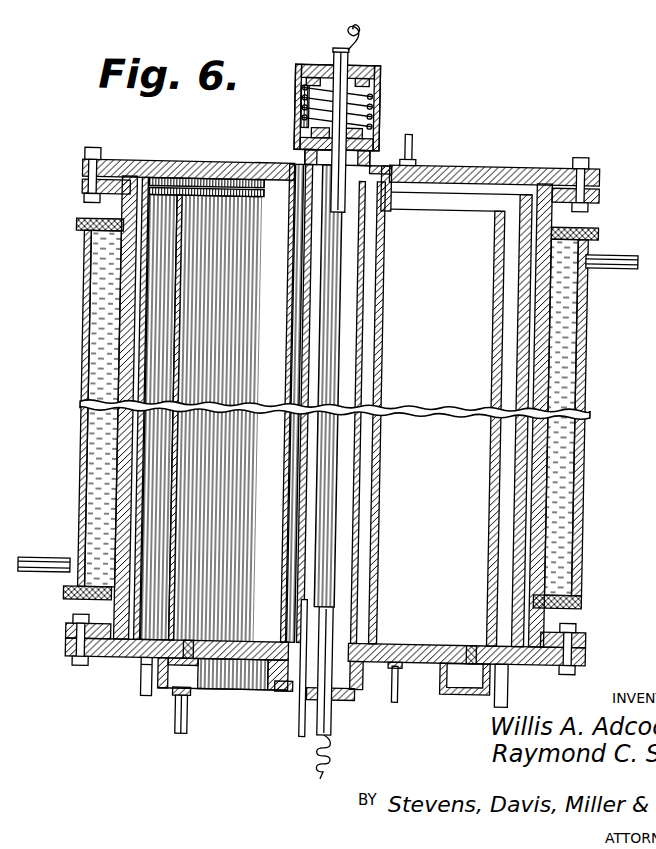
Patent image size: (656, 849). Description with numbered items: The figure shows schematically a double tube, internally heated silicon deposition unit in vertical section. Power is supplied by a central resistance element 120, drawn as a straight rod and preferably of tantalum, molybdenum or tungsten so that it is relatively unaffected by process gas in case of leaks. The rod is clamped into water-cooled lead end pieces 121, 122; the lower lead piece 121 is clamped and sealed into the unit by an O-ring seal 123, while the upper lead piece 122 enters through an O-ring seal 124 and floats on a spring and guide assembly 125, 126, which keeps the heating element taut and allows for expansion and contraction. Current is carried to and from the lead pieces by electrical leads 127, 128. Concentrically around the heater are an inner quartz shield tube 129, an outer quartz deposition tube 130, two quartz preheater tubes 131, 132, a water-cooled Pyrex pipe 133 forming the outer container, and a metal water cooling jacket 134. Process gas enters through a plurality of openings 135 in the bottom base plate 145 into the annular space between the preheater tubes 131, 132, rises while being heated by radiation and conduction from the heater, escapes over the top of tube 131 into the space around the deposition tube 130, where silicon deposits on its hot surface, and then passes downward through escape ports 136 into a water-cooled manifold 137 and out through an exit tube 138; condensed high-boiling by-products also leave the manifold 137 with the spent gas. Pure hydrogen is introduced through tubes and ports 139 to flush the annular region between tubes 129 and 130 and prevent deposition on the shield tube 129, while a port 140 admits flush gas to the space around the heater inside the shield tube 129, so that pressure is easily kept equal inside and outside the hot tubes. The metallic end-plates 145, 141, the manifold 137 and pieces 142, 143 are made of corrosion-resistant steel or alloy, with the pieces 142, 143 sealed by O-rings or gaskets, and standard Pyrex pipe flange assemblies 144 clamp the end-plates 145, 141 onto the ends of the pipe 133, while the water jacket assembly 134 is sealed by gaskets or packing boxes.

The resistance element 120 is at (330, 527).
The lower lead end piece 121 is at (339, 725).
The upper lead end piece 122 is at (343, 53).
The O-ring seal 123 is at (344, 702).
The O-ring seal 124 is at (344, 125).
The spring and guide assembly 125 is at (304, 104).
The spring and guide assembly 126 is at (375, 67).
The electrical lead 127 is at (327, 767).
The electrical lead 128 is at (338, 31).
The inner quartz shield tube 129 is at (360, 307).
The outer quartz deposition tube 130 is at (382, 371).
The quartz preheater tube 131 is at (495, 492).
The quartz preheater tube 132 is at (524, 378).
The water-cooled Pyrex pipe 133 is at (133, 459).
The metal water cooling jacket 134 is at (80, 330).
The openings 135 is at (140, 666).
The escape ports 136 is at (191, 648).
The manifold 137 is at (452, 694).
The exit tube 138 is at (194, 725).
The ports 139 is at (410, 148).
The port 140 is at (308, 724).
The end-plate 141 is at (207, 146).
The piece 142 is at (290, 693).
The piece 143 is at (296, 150).
The Pyrex pipe flange assembly 144 is at (593, 185).
The bottom base plate 145 is at (434, 631).